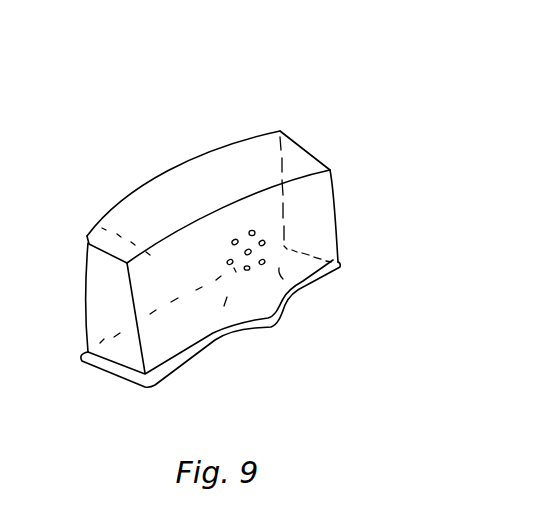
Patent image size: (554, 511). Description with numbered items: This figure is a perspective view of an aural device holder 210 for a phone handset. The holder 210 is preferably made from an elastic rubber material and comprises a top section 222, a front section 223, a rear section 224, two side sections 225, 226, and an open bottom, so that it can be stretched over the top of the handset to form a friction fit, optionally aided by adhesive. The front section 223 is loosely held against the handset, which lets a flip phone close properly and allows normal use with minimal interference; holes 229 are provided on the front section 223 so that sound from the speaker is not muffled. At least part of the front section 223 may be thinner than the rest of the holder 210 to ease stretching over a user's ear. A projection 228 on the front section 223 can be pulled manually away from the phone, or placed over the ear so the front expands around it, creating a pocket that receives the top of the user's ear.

The holder 210 is at (222, 237).
The top section 222 is at (190, 175).
The front section 223 is at (297, 273).
The rear section 224 is at (99, 227).
The side section 225 is at (100, 299).
The side section 226 is at (311, 200).
The projection 228 is at (266, 316).
The holes 229 is at (252, 230).